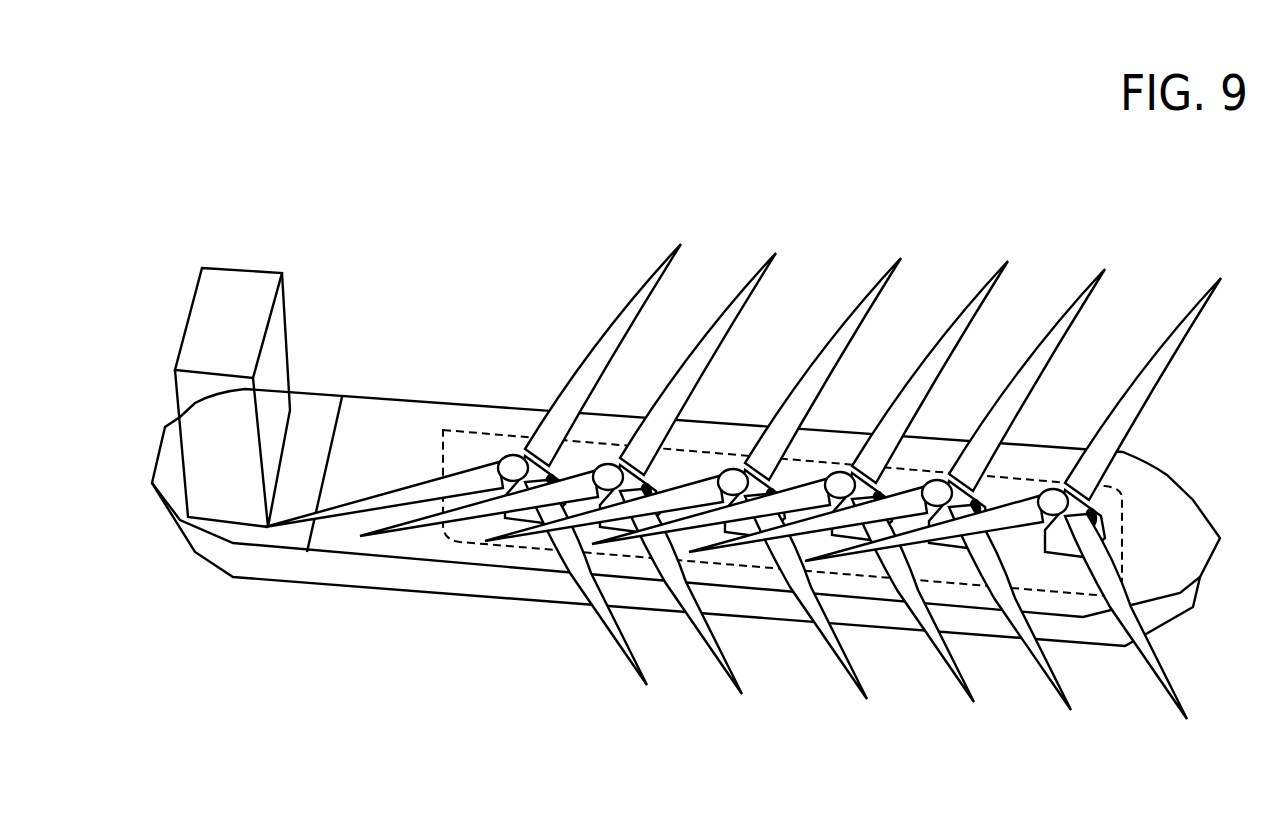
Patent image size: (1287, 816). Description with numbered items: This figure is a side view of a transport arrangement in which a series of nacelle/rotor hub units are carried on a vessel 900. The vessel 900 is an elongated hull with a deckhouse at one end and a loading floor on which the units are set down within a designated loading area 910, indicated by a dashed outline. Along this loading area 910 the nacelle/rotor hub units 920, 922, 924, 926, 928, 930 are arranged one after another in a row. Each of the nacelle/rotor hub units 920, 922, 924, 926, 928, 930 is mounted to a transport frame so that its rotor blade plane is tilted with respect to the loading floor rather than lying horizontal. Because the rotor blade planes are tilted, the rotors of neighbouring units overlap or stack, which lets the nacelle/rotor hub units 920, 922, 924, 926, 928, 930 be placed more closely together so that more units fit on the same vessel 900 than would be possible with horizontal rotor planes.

The aerial vehicle body 900 is at (290, 568).
The rotor mounting region 910 is at (462, 545).
The rotor assembly 920 is at (545, 447).
The rotor assembly 922 is at (640, 463).
The rotor assembly 924 is at (757, 475).
The rotor assembly 926 is at (863, 475).
The rotor assembly 928 is at (967, 490).
The rotor assembly 930 is at (1110, 520).